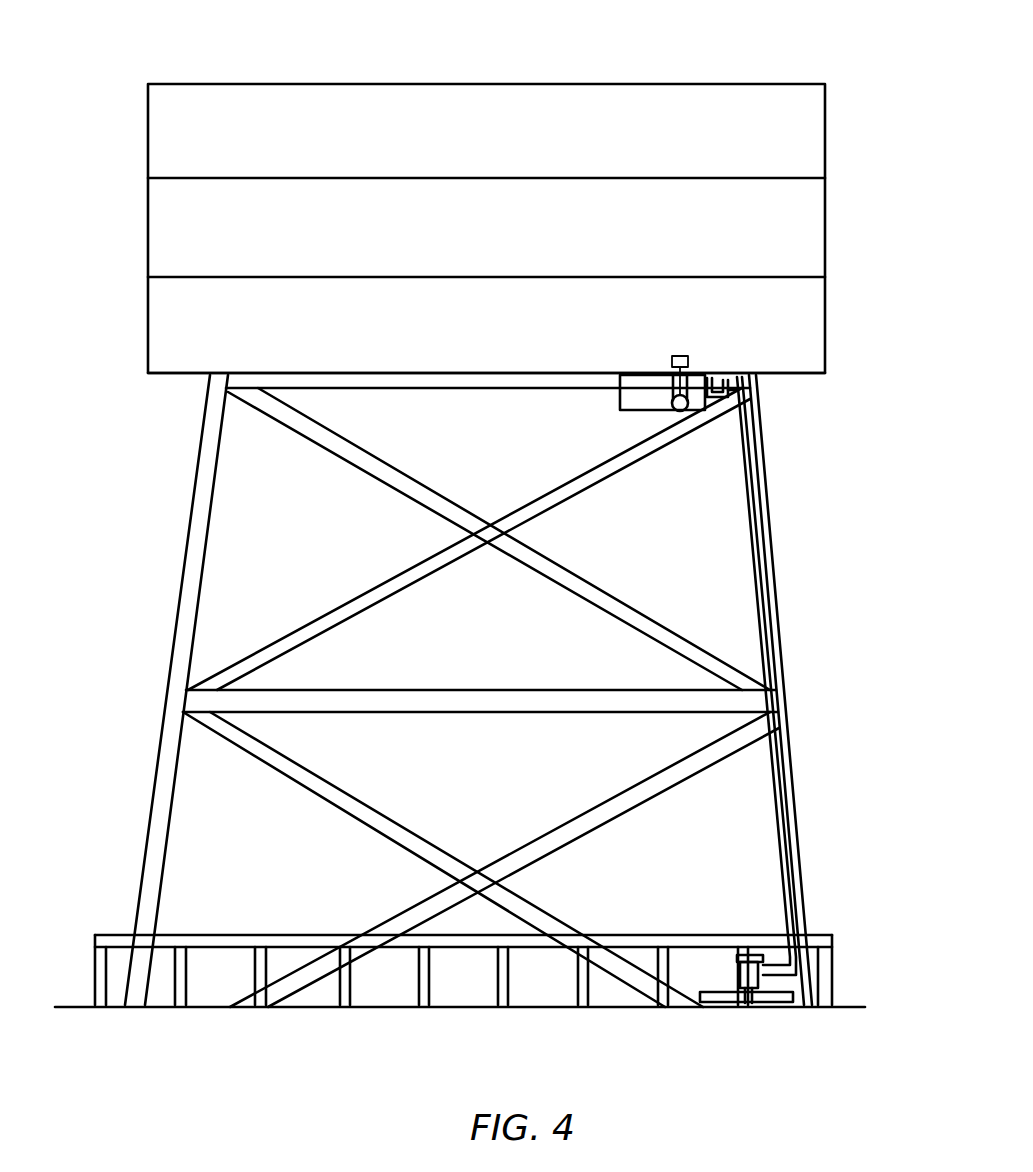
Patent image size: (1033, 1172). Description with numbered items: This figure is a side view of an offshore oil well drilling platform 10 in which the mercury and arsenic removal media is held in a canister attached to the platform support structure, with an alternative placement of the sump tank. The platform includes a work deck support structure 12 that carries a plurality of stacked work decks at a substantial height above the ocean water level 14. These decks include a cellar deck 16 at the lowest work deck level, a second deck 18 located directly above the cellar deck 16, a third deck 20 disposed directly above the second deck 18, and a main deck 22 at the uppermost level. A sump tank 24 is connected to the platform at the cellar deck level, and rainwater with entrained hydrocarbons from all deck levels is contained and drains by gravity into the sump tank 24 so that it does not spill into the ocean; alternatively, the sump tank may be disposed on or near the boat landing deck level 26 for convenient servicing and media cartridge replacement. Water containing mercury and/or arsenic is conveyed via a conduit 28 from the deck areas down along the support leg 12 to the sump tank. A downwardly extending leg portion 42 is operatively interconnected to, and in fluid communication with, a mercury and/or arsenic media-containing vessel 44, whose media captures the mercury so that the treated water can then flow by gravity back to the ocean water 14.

The offshore drilling platform 10 is at (852, 299).
The work deck support structure 12 is at (774, 611).
The ocean water level 14 is at (76, 1004).
The cellar deck 16 is at (195, 372).
The second deck 18 is at (200, 275).
The third deck 20 is at (200, 178).
The main deck 22 is at (205, 83).
The sump tank 24 is at (707, 404).
The boat landing deck level 26 is at (630, 935).
The conduit 28 is at (750, 510).
The downwardly extending leg portion 42 is at (778, 668).
The mercury and/or arsenic media-containing vessel 44 is at (762, 974).